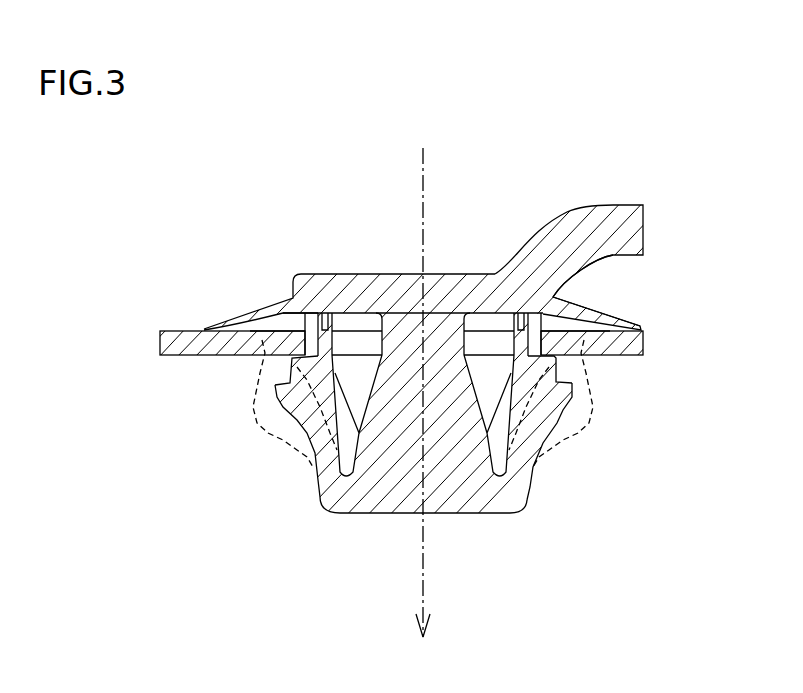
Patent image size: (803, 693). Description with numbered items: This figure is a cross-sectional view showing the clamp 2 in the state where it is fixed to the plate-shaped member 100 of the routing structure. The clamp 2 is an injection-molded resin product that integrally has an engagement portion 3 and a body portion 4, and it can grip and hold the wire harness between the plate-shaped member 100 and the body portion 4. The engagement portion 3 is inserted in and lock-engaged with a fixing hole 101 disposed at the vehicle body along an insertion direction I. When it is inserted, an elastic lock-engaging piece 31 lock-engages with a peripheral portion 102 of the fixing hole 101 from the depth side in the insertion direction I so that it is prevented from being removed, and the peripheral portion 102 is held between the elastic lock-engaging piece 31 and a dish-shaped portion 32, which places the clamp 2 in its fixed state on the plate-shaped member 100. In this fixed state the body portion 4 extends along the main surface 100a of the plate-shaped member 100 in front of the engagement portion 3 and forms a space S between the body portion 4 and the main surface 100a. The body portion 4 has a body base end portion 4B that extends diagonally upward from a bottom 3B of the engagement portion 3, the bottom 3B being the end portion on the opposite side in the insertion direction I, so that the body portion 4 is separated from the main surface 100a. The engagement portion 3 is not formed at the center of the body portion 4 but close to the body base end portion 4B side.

The clamp 2 is at (312, 512).
The engagement portion 3 is at (292, 274).
The bottom 3B is at (382, 290).
The body portion 4 is at (612, 206).
The body base end portion 4B is at (543, 257).
The space S is at (596, 288).
The elastic lock-engaging piece 31 is at (302, 414).
The dish-shaped portion 32 is at (593, 352).
The plate-shaped member 100 is at (187, 332).
The main surface 100a is at (168, 331).
The fixing hole 101 is at (488, 347).
The peripheral portion 102 is at (258, 333).
The insertion direction I is at (423, 577).